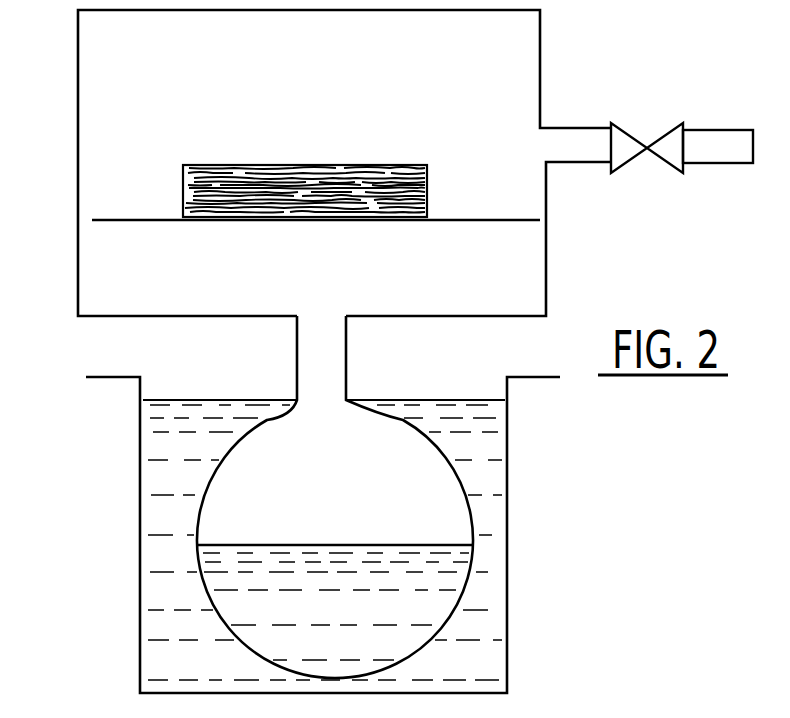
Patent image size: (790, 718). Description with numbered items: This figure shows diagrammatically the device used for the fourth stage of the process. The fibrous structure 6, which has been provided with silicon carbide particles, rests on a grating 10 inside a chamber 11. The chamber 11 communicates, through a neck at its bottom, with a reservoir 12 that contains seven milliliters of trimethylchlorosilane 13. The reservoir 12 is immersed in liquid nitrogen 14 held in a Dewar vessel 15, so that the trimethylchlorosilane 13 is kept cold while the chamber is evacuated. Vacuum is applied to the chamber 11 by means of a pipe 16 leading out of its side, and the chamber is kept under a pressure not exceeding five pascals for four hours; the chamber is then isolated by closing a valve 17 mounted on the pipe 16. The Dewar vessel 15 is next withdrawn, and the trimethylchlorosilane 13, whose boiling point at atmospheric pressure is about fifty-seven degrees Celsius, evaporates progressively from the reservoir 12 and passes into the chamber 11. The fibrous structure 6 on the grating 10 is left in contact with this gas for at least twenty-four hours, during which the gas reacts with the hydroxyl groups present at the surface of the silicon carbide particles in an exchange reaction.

The fibrous structure 6 is at (207, 165).
The grating 10 is at (100, 222).
The chamber 11 is at (74, 50).
The reservoir 12 is at (470, 597).
The trimethylchlorosilane 13 is at (232, 595).
The liquid nitrogen 14 is at (492, 440).
The Dewar vessel 15 is at (131, 428).
The pipe 16 is at (712, 143).
The valve 17 is at (624, 143).